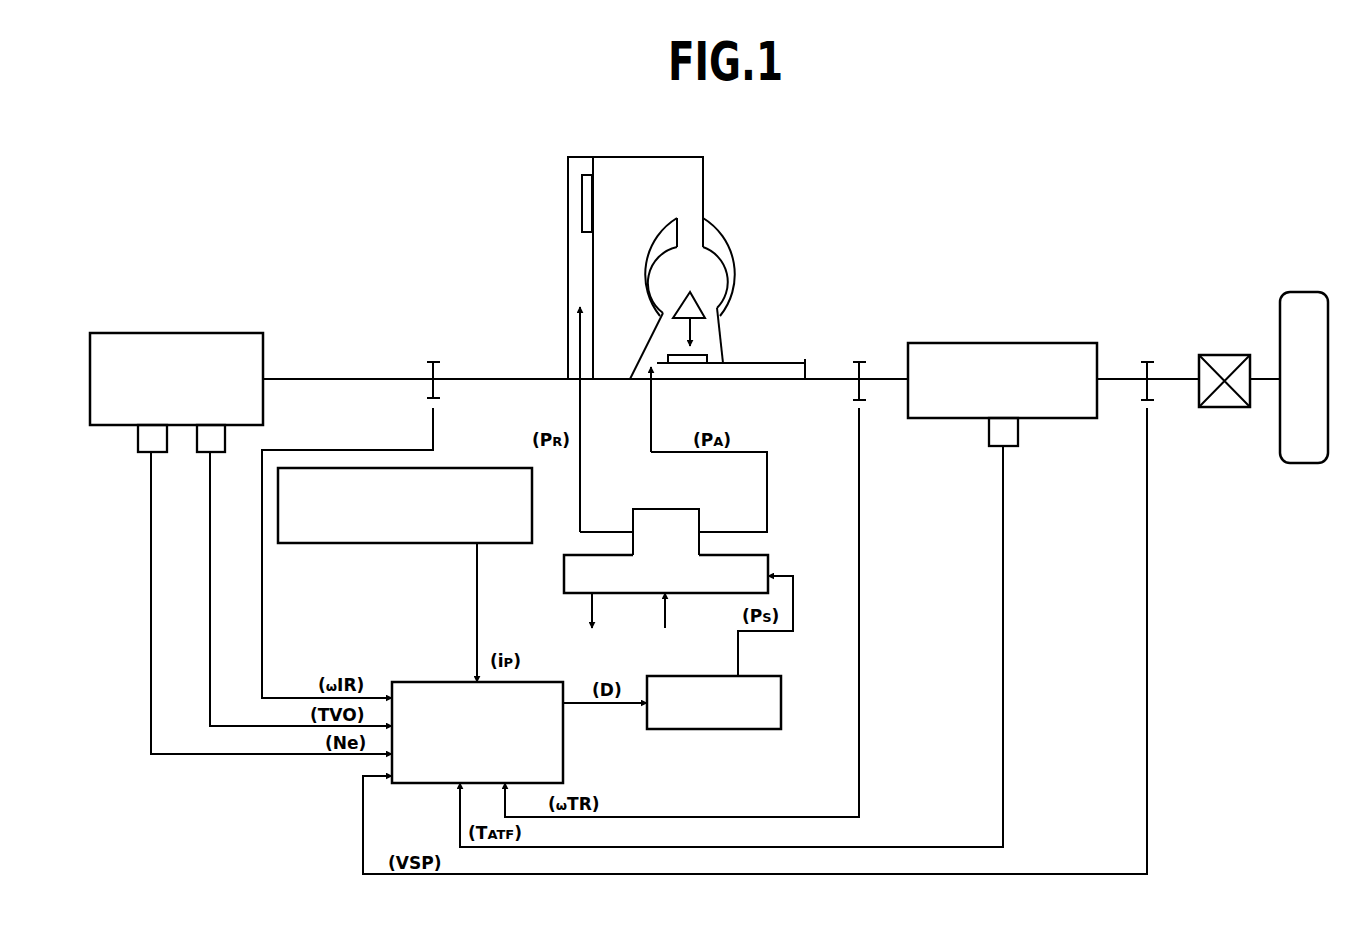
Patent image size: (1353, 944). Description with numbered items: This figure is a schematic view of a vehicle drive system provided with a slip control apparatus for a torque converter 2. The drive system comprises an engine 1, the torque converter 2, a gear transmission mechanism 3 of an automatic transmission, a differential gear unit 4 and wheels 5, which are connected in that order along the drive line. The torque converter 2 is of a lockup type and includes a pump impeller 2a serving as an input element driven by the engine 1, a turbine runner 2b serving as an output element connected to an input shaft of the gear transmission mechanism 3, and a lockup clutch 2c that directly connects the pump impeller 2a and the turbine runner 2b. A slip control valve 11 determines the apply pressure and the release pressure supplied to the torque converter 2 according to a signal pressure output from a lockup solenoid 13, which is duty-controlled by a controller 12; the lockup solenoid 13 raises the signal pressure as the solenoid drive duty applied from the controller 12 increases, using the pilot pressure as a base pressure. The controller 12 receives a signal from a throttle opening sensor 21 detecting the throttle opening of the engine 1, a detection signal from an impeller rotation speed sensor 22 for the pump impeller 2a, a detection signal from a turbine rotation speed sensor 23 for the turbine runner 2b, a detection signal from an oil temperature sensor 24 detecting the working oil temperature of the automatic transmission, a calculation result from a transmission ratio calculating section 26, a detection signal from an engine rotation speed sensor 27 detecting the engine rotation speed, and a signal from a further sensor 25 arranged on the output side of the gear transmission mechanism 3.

The engine 1 is at (220, 333).
The torque converter 2 is at (699, 244).
The pump impeller 2a is at (745, 295).
The turbine runner 2b is at (662, 237).
The lockup clutch 2c is at (590, 175).
The gear transmission mechanism 3 is at (1053, 343).
The differential gear unit 4 is at (1226, 355).
The wheels 5 is at (1304, 292).
The slip control valve 11 is at (768, 558).
The controller 12 is at (405, 682).
The lockup solenoid 13 is at (783, 690).
The throttle opening sensor 21 is at (197, 442).
The impeller rotation speed sensor 22 is at (440, 372).
The turbine rotation speed sensor 23 is at (853, 388).
The oil temperature sensor 24 is at (1018, 432).
The vehicle speed sensor 25 is at (1153, 400).
The transmission ratio calculating section 26 is at (453, 468).
The engine rotation speed sensor 27 is at (137, 442).